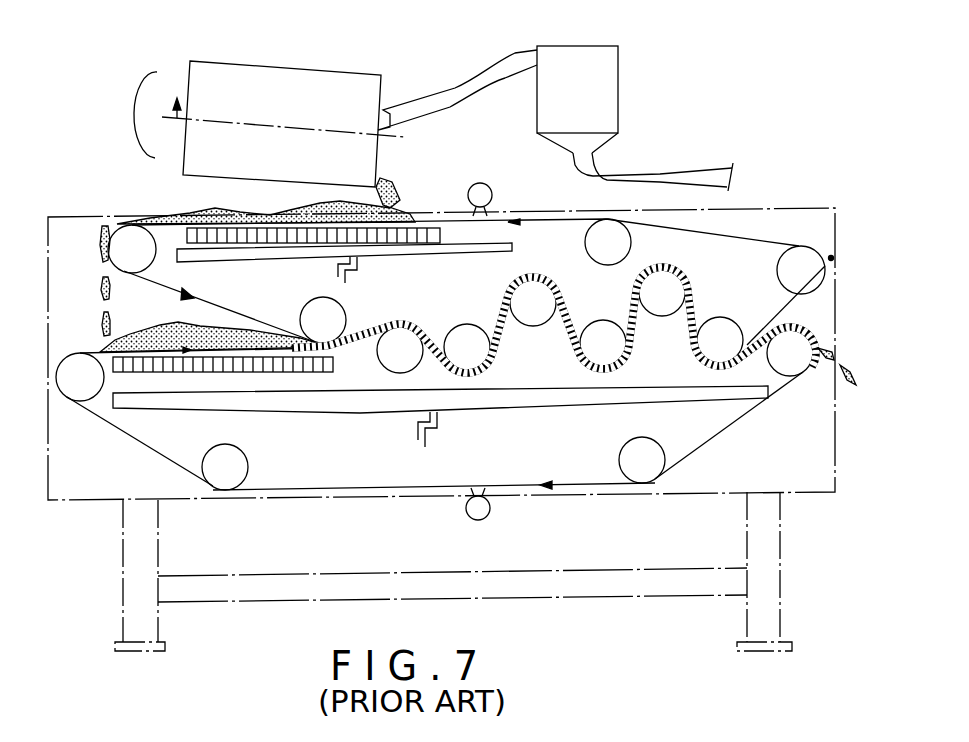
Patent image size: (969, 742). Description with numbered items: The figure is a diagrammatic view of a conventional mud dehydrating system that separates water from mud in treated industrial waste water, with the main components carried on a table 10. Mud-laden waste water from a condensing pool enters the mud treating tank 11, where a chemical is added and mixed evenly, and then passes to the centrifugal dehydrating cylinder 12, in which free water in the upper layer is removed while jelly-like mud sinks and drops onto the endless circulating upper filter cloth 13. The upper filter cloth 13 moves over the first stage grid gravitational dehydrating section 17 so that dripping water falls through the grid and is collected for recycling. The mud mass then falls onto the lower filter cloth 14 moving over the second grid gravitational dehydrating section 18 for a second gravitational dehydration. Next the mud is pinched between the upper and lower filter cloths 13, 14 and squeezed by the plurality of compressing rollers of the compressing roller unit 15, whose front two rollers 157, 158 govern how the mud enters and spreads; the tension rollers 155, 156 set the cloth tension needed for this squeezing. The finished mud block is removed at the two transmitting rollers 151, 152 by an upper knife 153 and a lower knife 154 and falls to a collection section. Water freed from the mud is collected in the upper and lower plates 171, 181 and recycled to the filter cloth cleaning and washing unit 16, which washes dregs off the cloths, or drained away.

The table 10 is at (843, 490).
The mud treating tank 11 is at (605, 100).
The centrifugal dehydrating cylinder 12 is at (320, 82).
The upper filter cloth 13 is at (738, 233).
The lower filter cloth 14 is at (710, 447).
The compressing roller unit 15 is at (543, 331).
The filter cloth cleaning and washing unit 16 is at (483, 193).
The first stage grid gravitational dehydrating section 17 is at (278, 232).
The upper plate 171 is at (428, 257).
The second grid gravitational dehydrating section 18 is at (283, 365).
The lower plate 181 is at (322, 407).
The transmitting roller 151 is at (793, 272).
The transmitting roller 152 is at (788, 363).
The upper knife 153 is at (834, 258).
The lower knife 154 is at (817, 365).
The tension roller 155 is at (123, 247).
The tension roller 156 is at (77, 382).
The front roller of compressing roller unit 157 is at (330, 320).
The front roller of compressing roller unit 158 is at (393, 347).